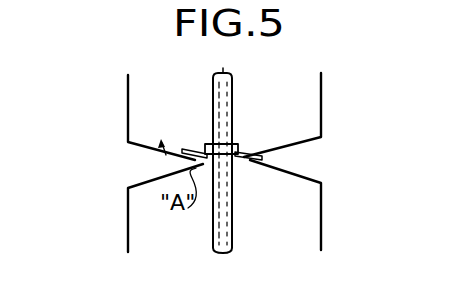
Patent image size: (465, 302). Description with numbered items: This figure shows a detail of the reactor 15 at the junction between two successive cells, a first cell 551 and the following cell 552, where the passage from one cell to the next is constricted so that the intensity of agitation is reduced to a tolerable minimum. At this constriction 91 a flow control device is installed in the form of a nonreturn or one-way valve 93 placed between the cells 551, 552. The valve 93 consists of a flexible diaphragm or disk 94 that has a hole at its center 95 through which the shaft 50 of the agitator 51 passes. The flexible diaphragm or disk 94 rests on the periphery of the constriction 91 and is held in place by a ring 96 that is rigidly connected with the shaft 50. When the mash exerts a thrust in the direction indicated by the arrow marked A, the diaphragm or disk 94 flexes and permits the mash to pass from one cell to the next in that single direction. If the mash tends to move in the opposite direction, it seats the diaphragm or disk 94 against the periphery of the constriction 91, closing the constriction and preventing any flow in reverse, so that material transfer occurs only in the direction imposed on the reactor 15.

The reactor 15 is at (120, 199).
The shaft 50 is at (234, 97).
The agitator 51 is at (213, 88).
The nonreturn valve 93 is at (183, 108).
The hole at the center 95 is at (201, 166).
The ring 96 is at (238, 136).
The flexible diaphragm or disk 94 is at (256, 157).
The constriction 91 is at (266, 162).
The cell 551 is at (322, 223).
The cell 552 is at (322, 107).